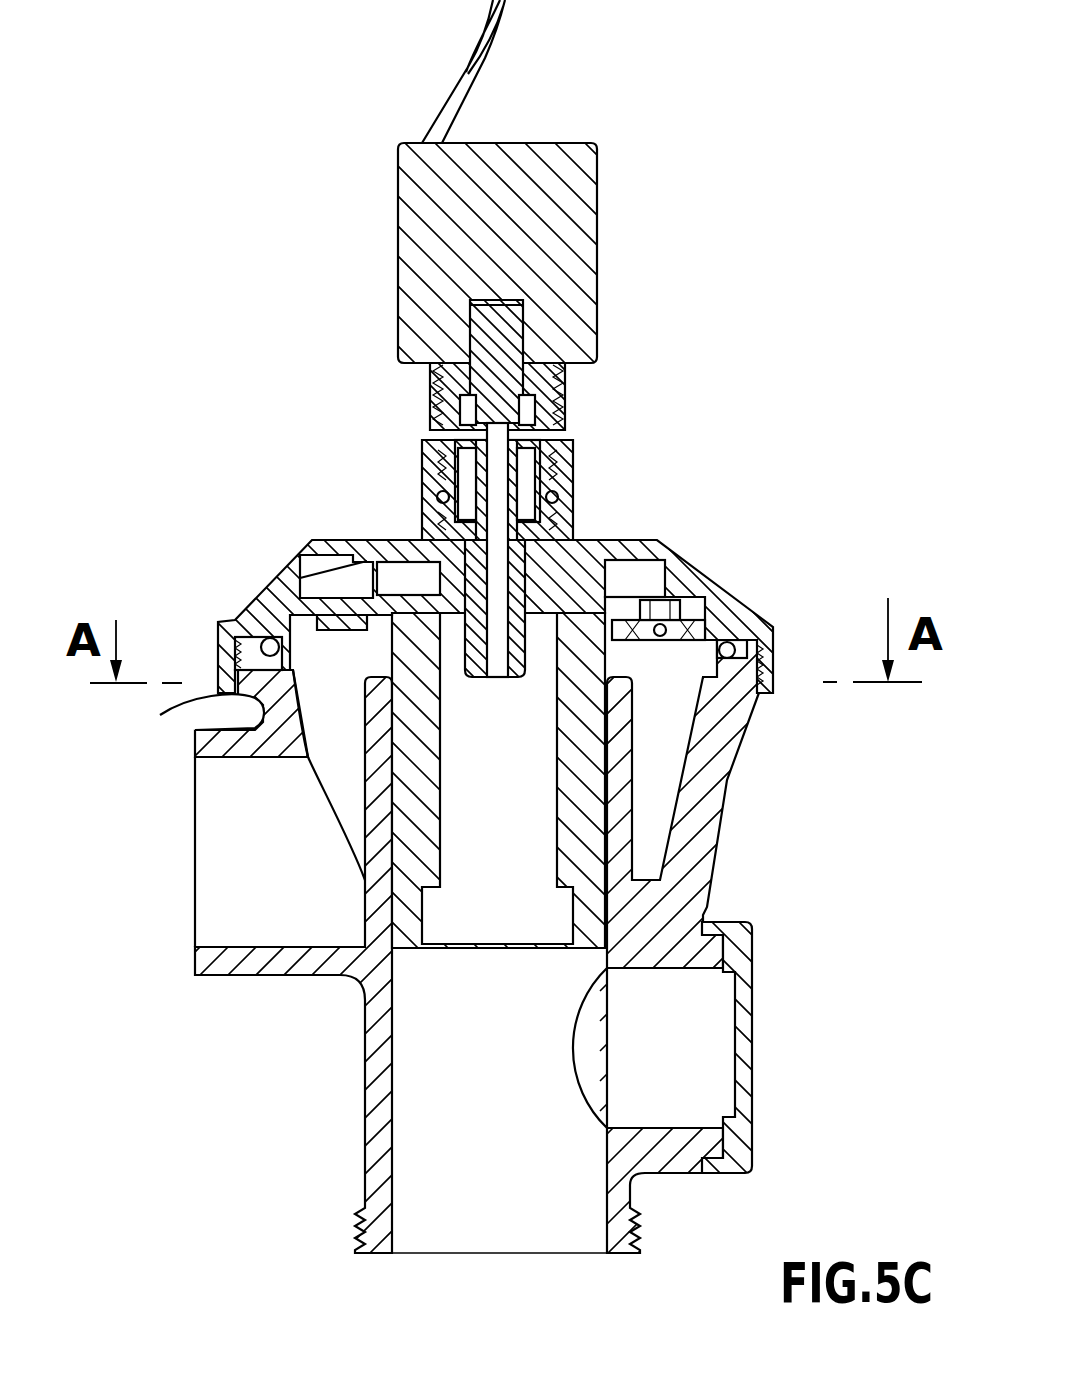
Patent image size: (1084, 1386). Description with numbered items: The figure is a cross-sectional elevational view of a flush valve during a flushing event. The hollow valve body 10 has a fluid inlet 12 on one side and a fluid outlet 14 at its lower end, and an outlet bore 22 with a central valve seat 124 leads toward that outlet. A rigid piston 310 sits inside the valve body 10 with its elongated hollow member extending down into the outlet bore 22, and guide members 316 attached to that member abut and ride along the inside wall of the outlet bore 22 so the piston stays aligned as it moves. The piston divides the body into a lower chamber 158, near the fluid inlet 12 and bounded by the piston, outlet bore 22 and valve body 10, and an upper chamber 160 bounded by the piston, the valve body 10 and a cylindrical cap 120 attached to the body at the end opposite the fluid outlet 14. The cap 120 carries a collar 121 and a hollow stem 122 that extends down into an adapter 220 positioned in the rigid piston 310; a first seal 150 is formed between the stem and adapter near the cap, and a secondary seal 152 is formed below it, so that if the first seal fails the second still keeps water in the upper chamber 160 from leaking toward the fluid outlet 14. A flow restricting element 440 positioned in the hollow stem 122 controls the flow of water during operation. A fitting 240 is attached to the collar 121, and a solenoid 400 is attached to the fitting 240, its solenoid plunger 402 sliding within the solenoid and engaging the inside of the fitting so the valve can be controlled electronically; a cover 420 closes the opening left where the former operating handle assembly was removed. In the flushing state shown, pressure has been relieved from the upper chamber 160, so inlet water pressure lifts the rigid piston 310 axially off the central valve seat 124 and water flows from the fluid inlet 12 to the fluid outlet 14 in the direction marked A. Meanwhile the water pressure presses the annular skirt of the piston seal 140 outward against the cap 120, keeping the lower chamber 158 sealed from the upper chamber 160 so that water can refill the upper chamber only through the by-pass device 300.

The valve body 10 is at (492, 979).
The fluid inlet 12 is at (190, 859).
The fluid outlet 14 is at (507, 1253).
The outlet bore 22 is at (620, 753).
The cylindrical cap 120 is at (478, 569).
The collar 121 is at (573, 515).
The hollow stem 122 is at (443, 570).
The central valve seat 124 is at (232, 690).
The piston seal 140 is at (668, 604).
The first seal 150 is at (445, 608).
The secondary seal 152 is at (343, 582).
The lower chamber 158 is at (352, 779).
The upper chamber 160 is at (657, 572).
The adapter 220 is at (540, 562).
The fitting 240 is at (507, 443).
The by-pass device 300 is at (675, 597).
The rigid piston 310 is at (385, 735).
The guide members 316 is at (410, 830).
The solenoid 400 is at (605, 200).
The solenoid plunger 402 is at (512, 330).
The cover 420 is at (743, 1025).
The flow restricting element 440 is at (553, 482).